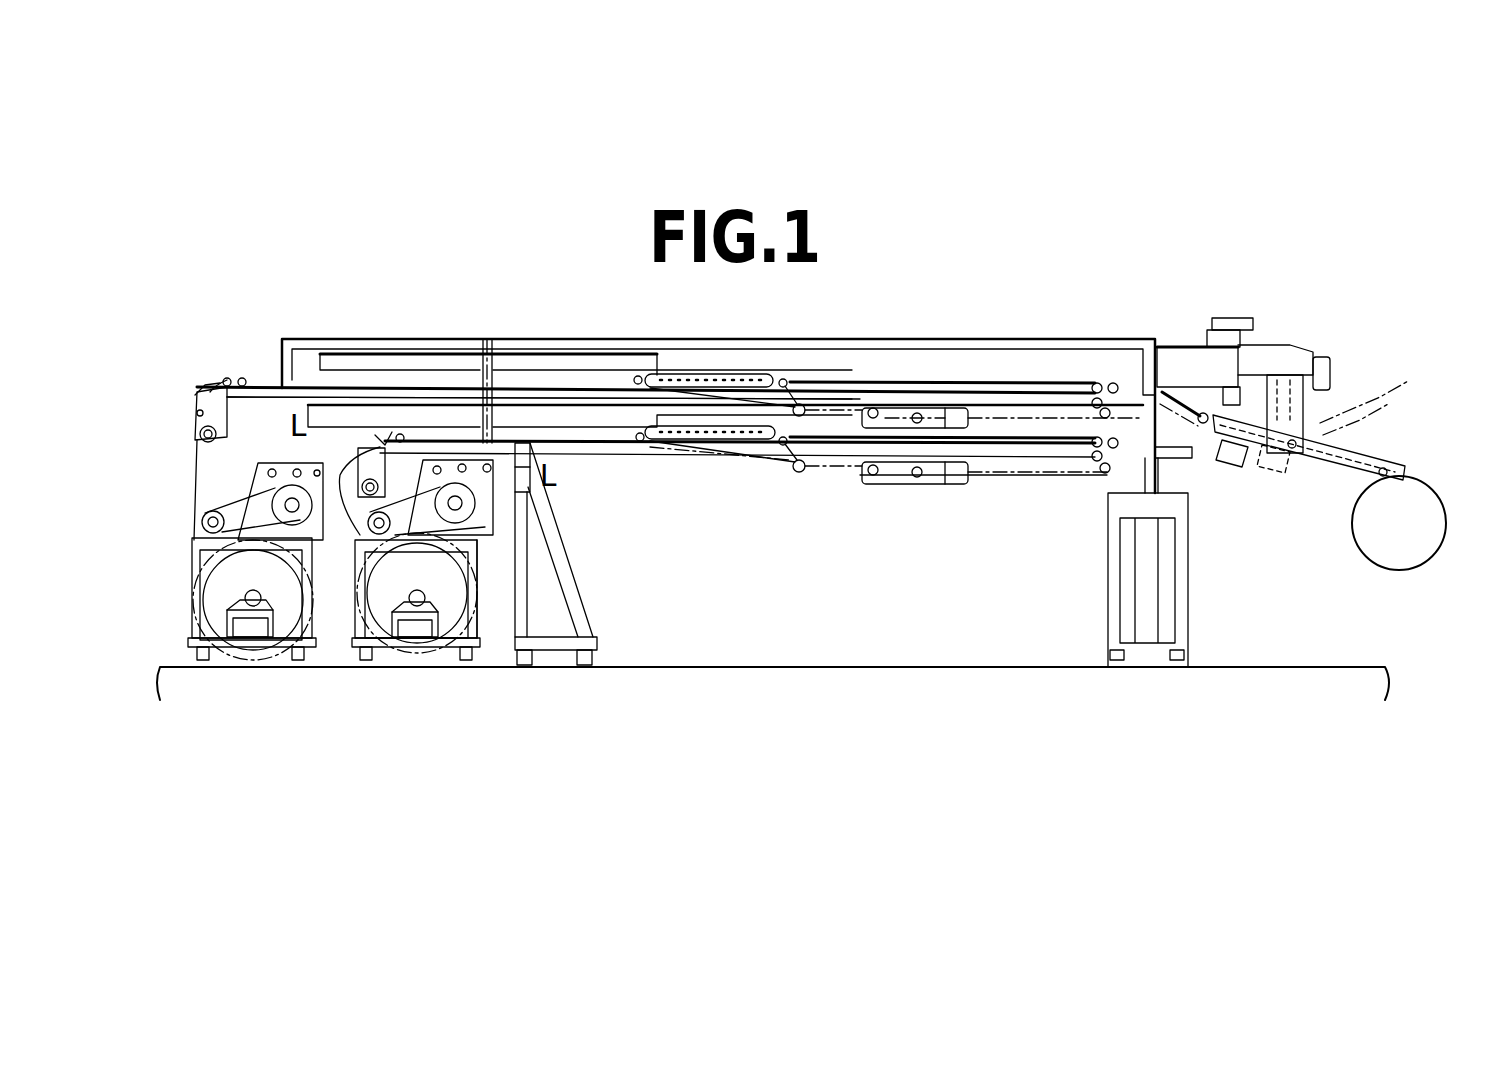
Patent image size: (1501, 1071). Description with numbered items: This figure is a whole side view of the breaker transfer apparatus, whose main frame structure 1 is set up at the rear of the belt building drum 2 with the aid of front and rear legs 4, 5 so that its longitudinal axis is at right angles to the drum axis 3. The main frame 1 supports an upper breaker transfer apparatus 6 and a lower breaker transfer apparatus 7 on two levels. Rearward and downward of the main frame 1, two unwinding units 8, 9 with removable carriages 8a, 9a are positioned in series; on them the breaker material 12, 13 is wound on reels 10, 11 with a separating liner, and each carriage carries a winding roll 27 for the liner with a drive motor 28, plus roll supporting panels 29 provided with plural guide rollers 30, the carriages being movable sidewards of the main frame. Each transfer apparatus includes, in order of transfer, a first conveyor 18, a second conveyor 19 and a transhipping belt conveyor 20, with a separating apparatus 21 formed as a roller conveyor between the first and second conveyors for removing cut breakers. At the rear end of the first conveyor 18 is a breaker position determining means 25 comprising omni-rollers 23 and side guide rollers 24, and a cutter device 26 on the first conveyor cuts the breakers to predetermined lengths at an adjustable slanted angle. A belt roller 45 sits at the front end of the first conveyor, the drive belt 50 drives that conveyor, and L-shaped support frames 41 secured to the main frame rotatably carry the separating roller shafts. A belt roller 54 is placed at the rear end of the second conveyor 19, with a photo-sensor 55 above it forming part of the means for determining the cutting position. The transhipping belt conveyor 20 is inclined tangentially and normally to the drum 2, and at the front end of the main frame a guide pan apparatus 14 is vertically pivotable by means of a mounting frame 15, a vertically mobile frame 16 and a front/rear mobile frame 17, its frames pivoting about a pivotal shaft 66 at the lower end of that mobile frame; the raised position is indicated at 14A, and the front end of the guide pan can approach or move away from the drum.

The main frame structure 1 is at (1008, 338).
The belt building drum 2 is at (1438, 495).
The drum axis 3 is at (1400, 527).
The front leg 4 is at (1190, 638).
The rear leg 5 is at (575, 598).
The upper breaker transfer apparatus 6 is at (1048, 380).
The lower breaker transfer apparatus 7 is at (1063, 437).
The unwinding unit 8 is at (190, 640).
The removable carriage 8a is at (200, 548).
The unwinding unit 9 is at (356, 647).
The removable carriage 9a is at (478, 622).
The reel 10 is at (305, 640).
The reel 11 is at (446, 660).
The breaker material 12 is at (193, 483).
The breaker material 13 is at (368, 545).
The guide pan apparatus 14 is at (1375, 453).
The swing arm raised position 14A is at (1398, 391).
The mounting frame 15 is at (1188, 362).
The vertically mobile frame 16 is at (1245, 363).
The front/rear mobile frame 17 is at (1302, 415).
The first conveyor 18 is at (312, 375).
The second conveyor 19 is at (918, 380).
The transhipping belt conveyor 20 is at (1170, 372).
The separating apparatus 21 is at (725, 374).
The omni-rollers 23 is at (245, 378).
The side guide rollers 24 is at (210, 377).
The breaker position determining means 25 is at (202, 370).
The cutter device 26 is at (470, 372).
The winding roll 27 is at (270, 495).
The drive motor 28 is at (200, 520).
The roll supporting panels 29 is at (270, 476).
The guide rollers 30 is at (295, 470).
The L-shaped support frames 41 is at (690, 376).
The belt roller 45 is at (636, 377).
The drive belt 50 is at (692, 456).
The belt roller 54 is at (800, 403).
The photo-sensor 55 is at (786, 380).
The pivotal shaft 66 is at (1303, 455).